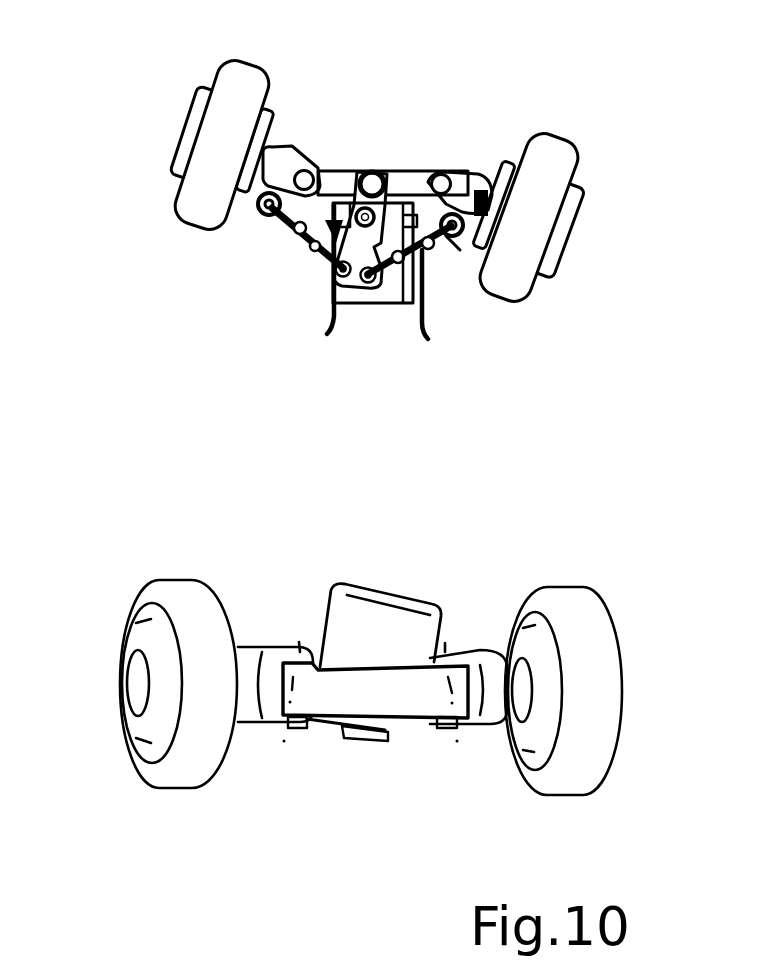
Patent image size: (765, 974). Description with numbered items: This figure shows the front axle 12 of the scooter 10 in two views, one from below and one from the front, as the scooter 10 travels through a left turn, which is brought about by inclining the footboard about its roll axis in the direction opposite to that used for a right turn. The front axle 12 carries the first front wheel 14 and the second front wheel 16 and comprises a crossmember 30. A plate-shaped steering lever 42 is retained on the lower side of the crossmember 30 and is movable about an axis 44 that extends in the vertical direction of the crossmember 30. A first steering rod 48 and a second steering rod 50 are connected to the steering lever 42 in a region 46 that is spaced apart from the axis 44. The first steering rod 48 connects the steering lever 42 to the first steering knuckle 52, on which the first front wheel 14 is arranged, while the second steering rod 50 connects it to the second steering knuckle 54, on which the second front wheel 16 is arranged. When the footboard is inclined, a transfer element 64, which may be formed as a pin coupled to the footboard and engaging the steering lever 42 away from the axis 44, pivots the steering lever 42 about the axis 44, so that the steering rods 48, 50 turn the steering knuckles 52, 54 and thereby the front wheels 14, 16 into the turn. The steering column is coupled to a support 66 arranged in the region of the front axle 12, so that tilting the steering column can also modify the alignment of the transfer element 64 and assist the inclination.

The scooter 10 is at (138, 64).
The front axle 12 is at (286, 309).
The first front wheel 14 is at (537, 218).
The second front wheel 16 is at (196, 137).
The crossmember 30 is at (408, 182).
The steering lever 42 is at (310, 237).
The axis 44 is at (370, 173).
The region 46 is at (322, 310).
The first steering rod 48 is at (448, 242).
The second steering rod 50 is at (318, 244).
The first steering knuckle 52 is at (476, 174).
The second steering knuckle 54 is at (290, 165).
The transfer element 64 is at (310, 214).
The support 66 is at (387, 620).